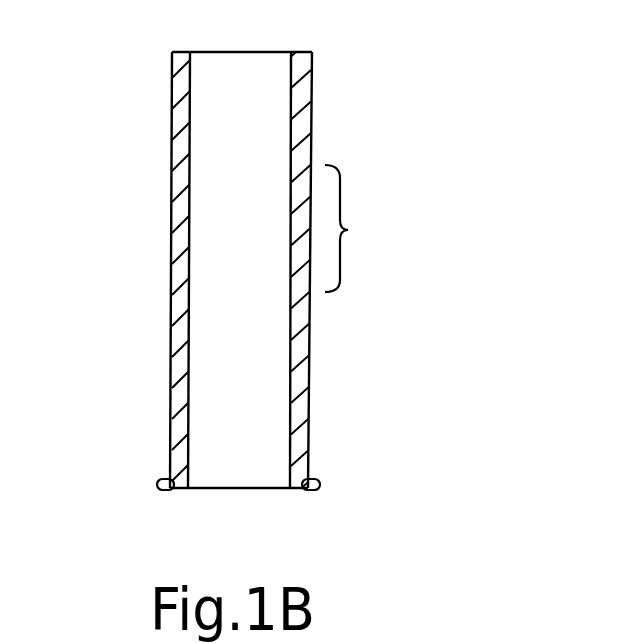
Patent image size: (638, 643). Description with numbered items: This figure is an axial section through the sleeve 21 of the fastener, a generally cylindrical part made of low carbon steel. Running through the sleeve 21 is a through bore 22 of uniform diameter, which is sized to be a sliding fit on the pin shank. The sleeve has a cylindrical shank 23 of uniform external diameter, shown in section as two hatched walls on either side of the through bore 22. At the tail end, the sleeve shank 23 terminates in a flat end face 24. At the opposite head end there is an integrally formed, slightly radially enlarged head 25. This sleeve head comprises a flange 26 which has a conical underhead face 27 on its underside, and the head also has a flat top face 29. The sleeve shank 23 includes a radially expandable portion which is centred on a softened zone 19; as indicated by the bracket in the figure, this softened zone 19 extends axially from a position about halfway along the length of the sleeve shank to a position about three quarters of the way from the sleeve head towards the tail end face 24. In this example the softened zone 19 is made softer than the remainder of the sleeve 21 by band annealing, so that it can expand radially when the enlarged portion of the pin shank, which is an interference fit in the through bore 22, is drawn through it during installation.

The softened zone 19 is at (358, 228).
The sleeve 21 is at (160, 246).
The through bore 22 is at (217, 321).
The cylindrical shank 23 is at (178, 180).
The flat end face 24 is at (305, 51).
The head 25 is at (312, 479).
The flange 26 is at (168, 490).
The conical underhead face 27 is at (164, 479).
The flat top face 29 is at (298, 491).